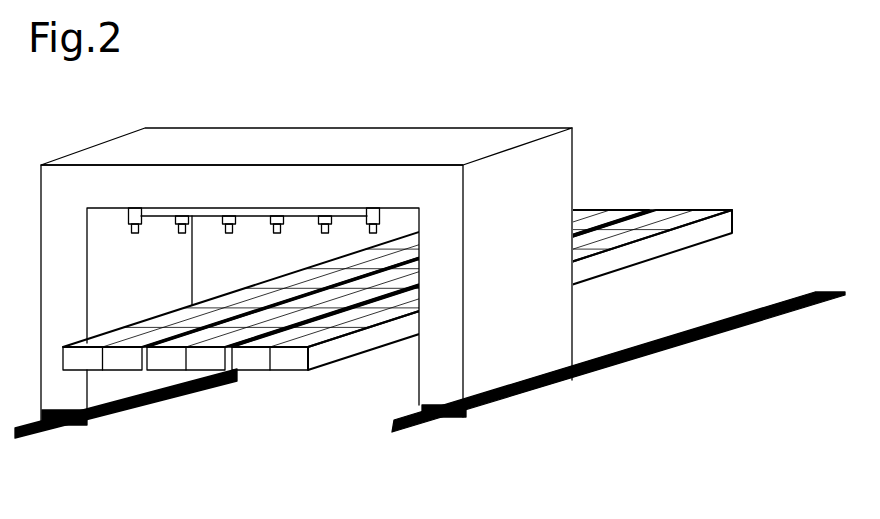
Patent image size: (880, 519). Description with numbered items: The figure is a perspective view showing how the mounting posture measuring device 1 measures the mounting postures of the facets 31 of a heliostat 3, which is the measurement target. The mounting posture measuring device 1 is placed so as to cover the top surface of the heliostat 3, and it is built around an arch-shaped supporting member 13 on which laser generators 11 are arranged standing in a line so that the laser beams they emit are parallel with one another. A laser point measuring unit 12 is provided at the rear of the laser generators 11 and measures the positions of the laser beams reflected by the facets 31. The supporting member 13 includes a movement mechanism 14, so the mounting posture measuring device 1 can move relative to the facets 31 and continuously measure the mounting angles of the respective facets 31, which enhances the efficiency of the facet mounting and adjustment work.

The mounting posture measuring device 1 is at (406, 97).
The heliostat 3 is at (281, 410).
The laser generator 11 is at (128, 222).
The laser point measuring unit 12 is at (205, 209).
The supporting member 13 is at (557, 335).
The movement mechanism 14 is at (513, 395).
The facet 31 is at (693, 215).